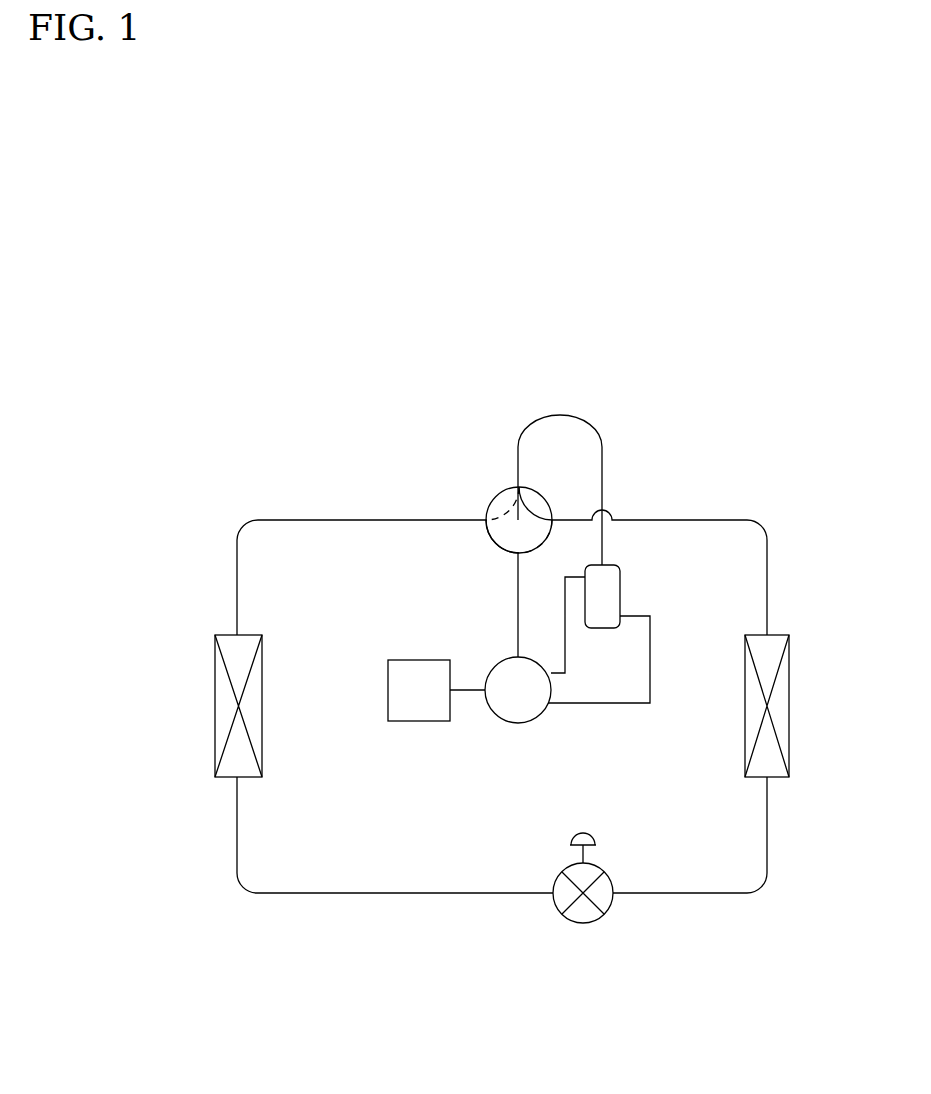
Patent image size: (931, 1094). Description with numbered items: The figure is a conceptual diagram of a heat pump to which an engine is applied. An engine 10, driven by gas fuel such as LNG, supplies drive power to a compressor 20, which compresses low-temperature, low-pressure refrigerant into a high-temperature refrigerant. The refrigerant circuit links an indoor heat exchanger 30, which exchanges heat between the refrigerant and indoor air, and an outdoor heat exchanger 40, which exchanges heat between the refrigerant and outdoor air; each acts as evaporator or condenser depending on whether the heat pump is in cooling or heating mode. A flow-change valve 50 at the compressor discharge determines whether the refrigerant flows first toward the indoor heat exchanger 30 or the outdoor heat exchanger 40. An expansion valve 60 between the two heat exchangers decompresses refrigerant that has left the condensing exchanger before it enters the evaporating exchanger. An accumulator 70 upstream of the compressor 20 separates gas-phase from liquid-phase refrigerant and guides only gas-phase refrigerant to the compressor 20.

The engine 10 is at (419, 721).
The compressor 20 is at (518, 723).
The indoor heat exchanger 30 is at (212, 628).
The outdoor heat exchanger 40 is at (795, 627).
The flow-change valve 50 is at (496, 495).
The expansion valve 60 is at (583, 923).
The accumulator 70 is at (620, 597).